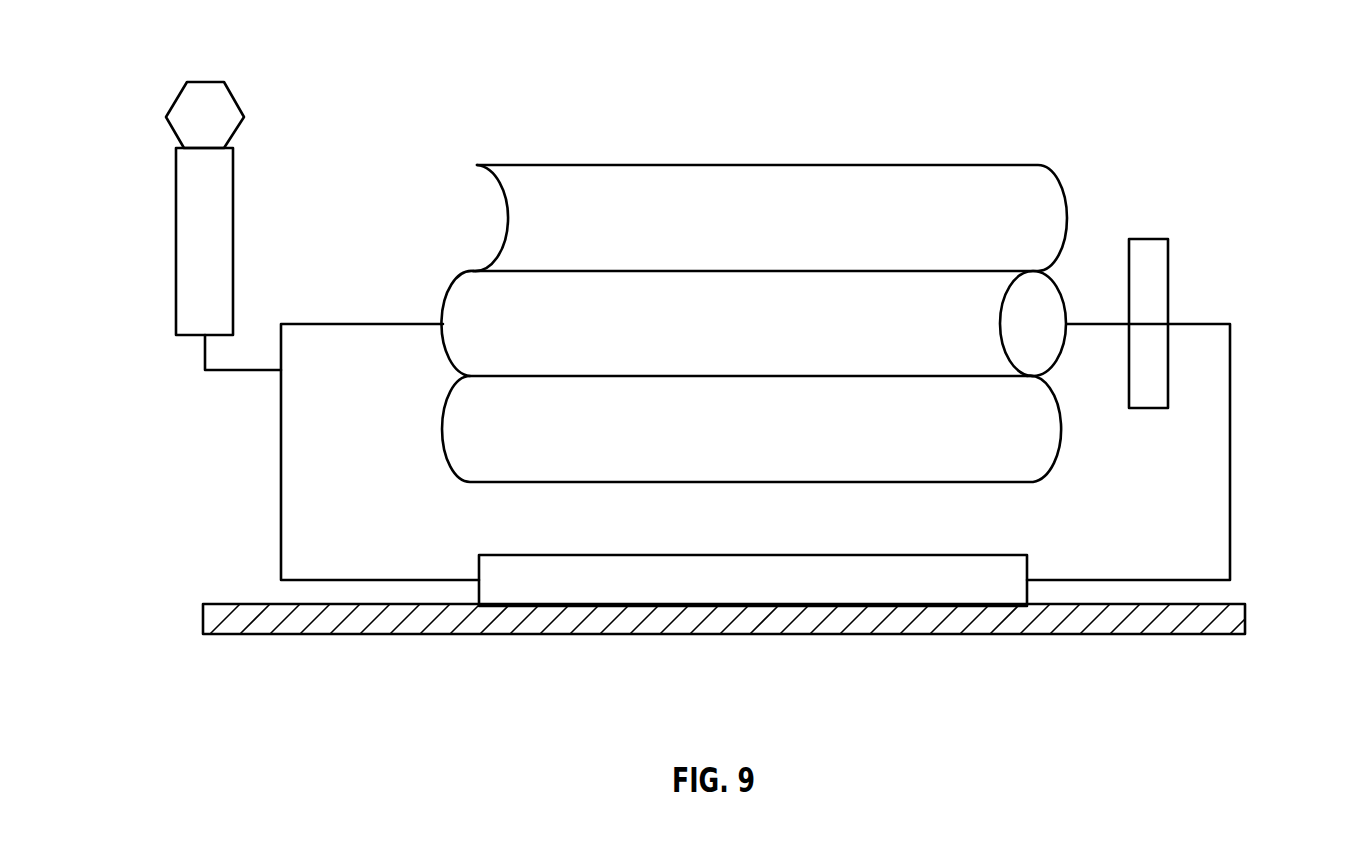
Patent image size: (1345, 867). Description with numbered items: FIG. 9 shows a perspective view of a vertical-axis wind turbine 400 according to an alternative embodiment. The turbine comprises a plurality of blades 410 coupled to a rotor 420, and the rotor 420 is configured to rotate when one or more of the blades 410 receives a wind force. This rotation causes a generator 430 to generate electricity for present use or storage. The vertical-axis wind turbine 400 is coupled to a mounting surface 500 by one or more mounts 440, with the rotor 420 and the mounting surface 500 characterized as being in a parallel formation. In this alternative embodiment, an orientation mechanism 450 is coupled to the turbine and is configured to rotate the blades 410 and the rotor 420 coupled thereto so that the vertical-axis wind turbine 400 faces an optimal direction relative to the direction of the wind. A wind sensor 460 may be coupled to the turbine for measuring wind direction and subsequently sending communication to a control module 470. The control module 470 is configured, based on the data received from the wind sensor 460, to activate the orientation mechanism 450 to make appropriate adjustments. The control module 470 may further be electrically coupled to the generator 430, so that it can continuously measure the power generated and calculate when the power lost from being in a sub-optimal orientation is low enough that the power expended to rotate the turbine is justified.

The vertical-axis wind turbine 400 is at (1224, 86).
The blades 410 is at (757, 165).
The rotor 420 is at (1034, 334).
The generator 430 is at (1152, 238).
The mounts 440 is at (281, 452).
The orientation mechanism 450 is at (532, 568).
The wind sensor 460 is at (180, 92).
The control module 470 is at (176, 265).
The mounting surface 500 is at (762, 638).